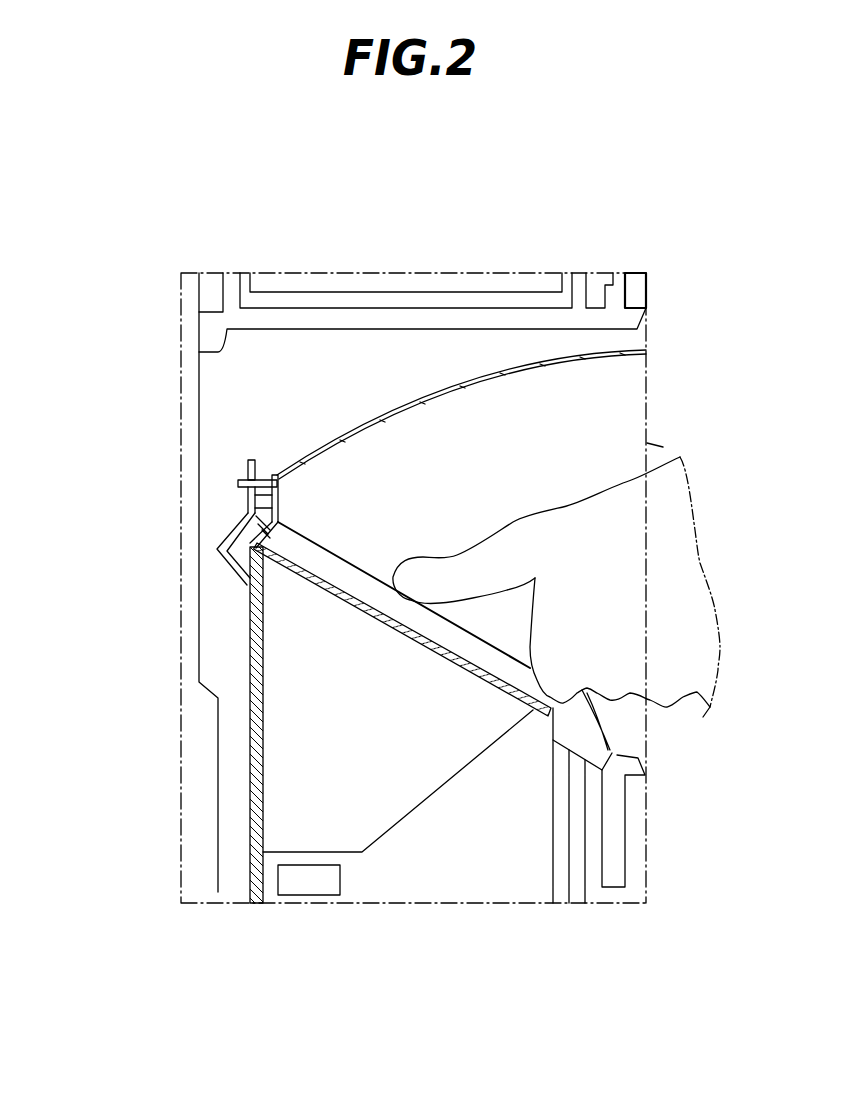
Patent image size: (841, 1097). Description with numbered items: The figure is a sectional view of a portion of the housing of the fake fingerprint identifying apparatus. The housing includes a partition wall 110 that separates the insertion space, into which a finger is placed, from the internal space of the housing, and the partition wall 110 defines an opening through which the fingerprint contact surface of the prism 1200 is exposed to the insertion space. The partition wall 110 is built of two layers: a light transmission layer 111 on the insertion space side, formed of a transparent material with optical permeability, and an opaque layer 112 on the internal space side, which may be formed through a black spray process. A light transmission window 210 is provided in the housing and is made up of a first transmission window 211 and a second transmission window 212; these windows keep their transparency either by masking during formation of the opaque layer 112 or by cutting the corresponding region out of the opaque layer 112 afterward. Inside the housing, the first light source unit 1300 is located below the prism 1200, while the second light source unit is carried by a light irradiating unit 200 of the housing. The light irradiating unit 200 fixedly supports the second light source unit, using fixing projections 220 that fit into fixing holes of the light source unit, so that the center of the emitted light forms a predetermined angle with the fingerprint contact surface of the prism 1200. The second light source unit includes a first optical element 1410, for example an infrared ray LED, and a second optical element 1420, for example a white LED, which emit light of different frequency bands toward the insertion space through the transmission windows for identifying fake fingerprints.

The partition wall 110 is at (298, 712).
The light transmission layer 111 is at (330, 572).
The opaque layer 112 is at (397, 630).
The light irradiating unit 200 is at (448, 449).
The light transmission window 210 is at (349, 511).
The first transmission window 211 is at (276, 528).
The second transmission window 212 is at (277, 507).
The fixing projections 220 is at (283, 472).
The prism 1200 is at (420, 772).
The first light source unit 1300 is at (343, 880).
The first optical element 1410 is at (248, 532).
The second optical element 1420 is at (247, 500).